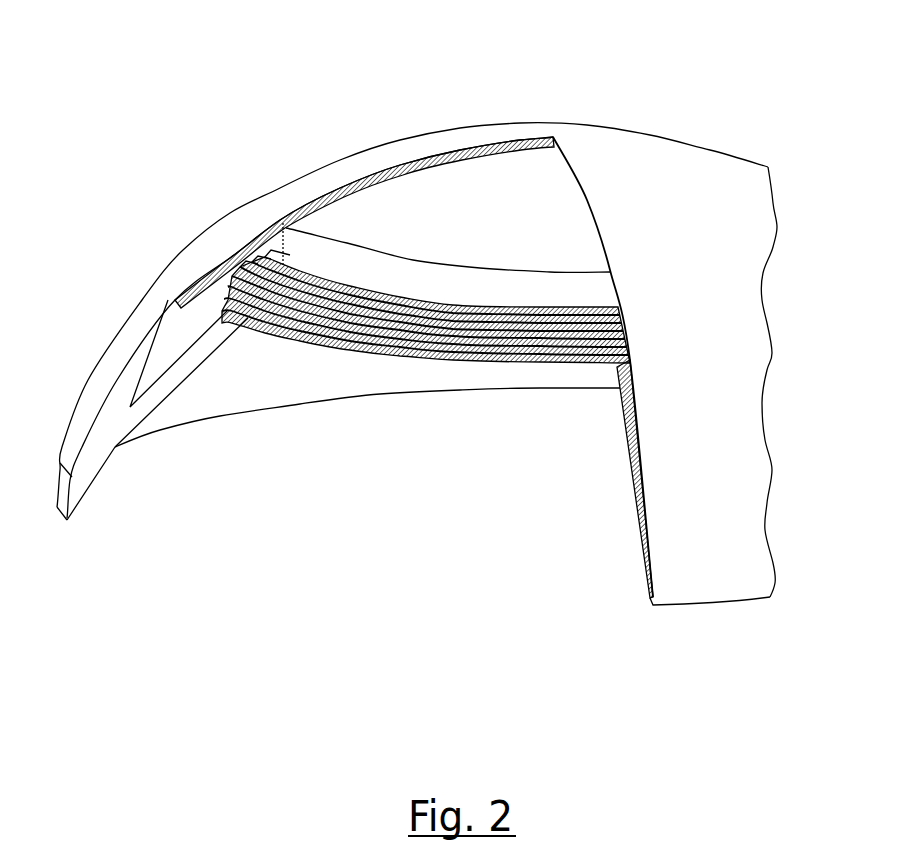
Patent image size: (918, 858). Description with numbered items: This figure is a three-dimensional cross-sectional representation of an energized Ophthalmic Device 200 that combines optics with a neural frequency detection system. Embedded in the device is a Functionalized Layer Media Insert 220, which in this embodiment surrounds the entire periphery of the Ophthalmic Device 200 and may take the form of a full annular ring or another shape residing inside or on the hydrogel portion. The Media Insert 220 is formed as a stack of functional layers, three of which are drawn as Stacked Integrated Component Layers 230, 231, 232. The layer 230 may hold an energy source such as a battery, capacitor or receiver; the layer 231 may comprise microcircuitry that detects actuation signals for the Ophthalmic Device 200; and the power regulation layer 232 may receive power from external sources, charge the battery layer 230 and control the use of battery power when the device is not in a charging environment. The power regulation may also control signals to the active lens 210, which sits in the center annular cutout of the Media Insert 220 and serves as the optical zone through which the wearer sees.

The Ophthalmic Device 200 is at (372, 88).
The active lens 210 is at (415, 208).
The Functionalized Layer Media Insert 220 is at (203, 333).
The layer 230 is at (453, 310).
The layer 231 is at (493, 334).
The power regulation layer 232 is at (548, 366).